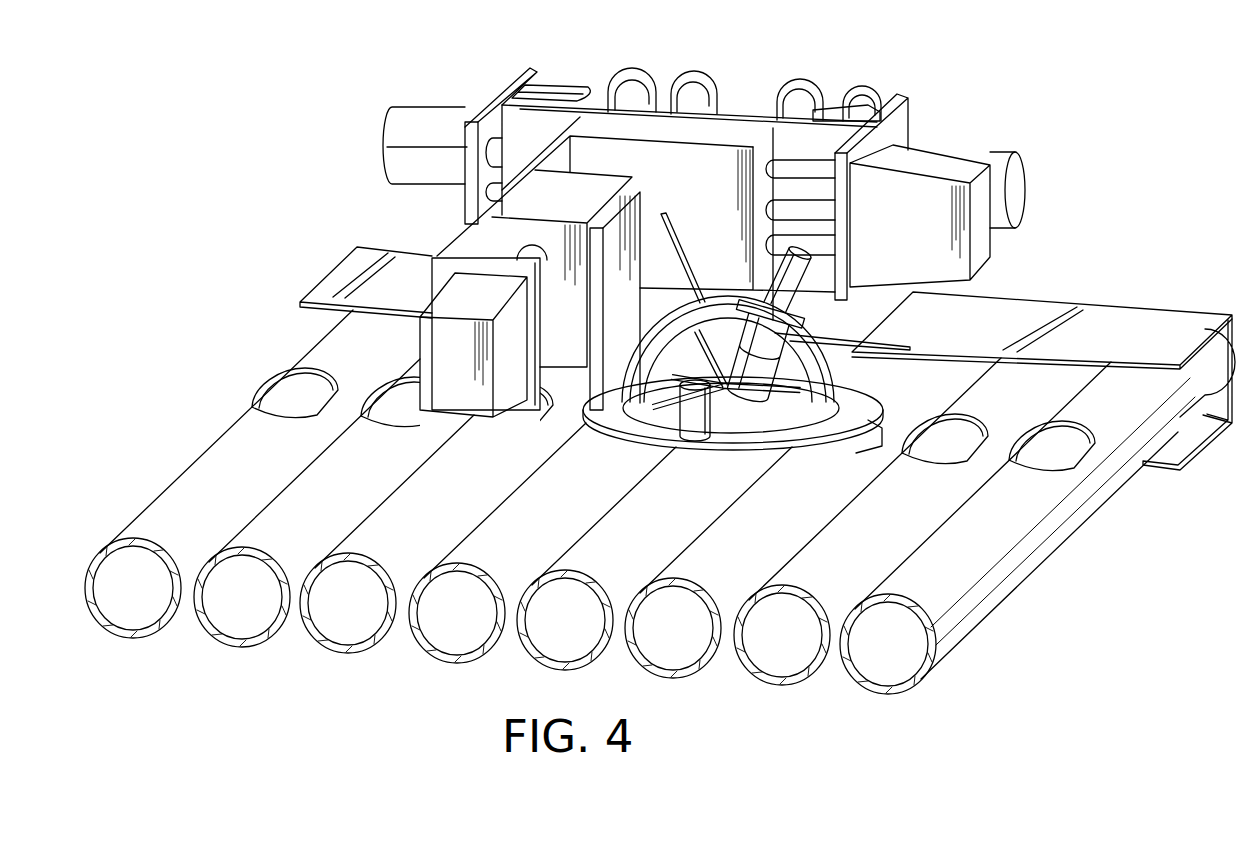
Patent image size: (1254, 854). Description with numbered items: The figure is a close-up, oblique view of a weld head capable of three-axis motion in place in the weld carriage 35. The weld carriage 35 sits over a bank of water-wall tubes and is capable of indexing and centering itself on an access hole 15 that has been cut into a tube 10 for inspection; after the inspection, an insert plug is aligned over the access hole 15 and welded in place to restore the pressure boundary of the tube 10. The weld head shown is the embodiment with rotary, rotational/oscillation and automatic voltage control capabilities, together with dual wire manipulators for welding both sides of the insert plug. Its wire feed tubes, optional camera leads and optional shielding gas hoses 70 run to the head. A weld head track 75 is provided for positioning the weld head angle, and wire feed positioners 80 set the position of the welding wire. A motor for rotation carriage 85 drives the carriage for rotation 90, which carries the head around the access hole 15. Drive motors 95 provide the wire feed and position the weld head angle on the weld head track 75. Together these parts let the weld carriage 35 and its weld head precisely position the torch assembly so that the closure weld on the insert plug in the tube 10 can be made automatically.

The tube 10 is at (1037, 557).
The access hole 15 is at (958, 434).
The weld carriage 35 is at (777, 70).
The wire feed tubes, camera leads, and shielding gas hoses 70 is at (681, 252).
The weld head track 75 is at (683, 318).
The wire feed positioners 80 is at (703, 344).
The motor for rotation carriage 85 is at (688, 412).
The carriage for rotation 90 is at (852, 406).
The drive motors 95 is at (773, 283).